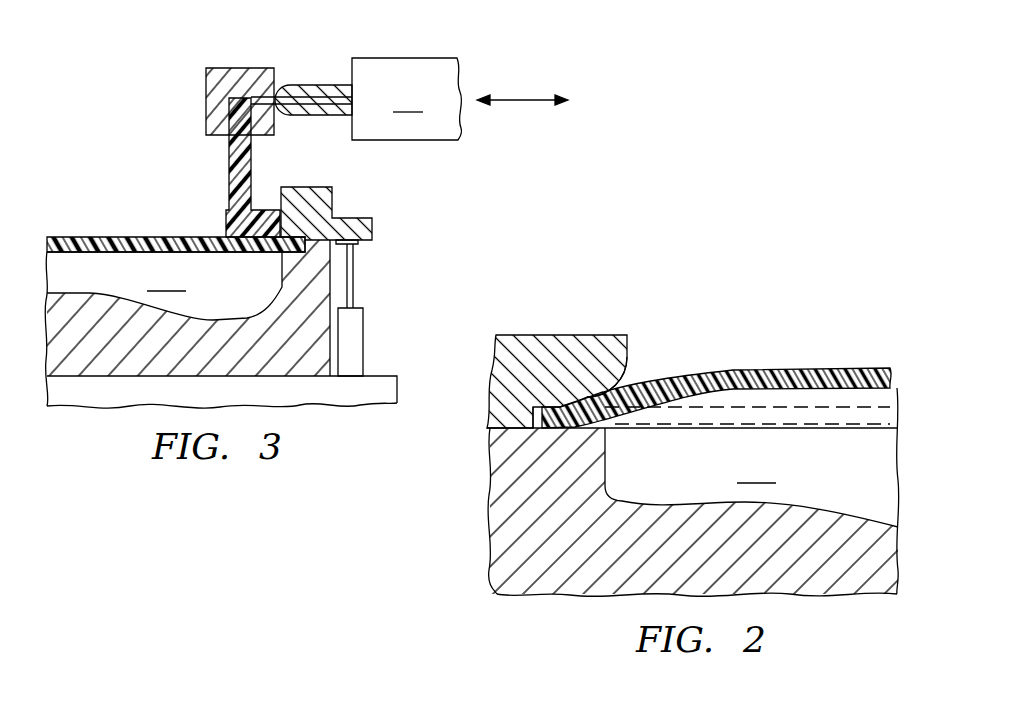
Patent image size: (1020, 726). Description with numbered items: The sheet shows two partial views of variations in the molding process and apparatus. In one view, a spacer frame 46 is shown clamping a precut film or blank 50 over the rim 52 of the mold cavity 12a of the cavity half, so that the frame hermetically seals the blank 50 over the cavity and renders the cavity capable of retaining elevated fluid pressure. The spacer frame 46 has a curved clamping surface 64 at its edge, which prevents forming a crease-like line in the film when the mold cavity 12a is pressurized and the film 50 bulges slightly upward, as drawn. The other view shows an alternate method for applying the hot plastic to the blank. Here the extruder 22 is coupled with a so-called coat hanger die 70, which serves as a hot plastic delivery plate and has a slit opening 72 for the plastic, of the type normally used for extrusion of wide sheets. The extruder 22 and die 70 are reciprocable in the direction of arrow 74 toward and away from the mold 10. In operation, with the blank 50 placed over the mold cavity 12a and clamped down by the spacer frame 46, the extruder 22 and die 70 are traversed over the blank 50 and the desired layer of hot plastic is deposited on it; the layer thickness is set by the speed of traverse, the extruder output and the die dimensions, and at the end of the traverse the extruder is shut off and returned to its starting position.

In FIG. 3, the mold 10 is at (97, 201).
In FIG. 3, the mold cavity 12a is at (221, 324).
In FIG. 2, the mold cavity 12a is at (693, 492).
In FIG. 3, the extruder/injection unit 22 is at (407, 99).
In FIG. 3, the spacer frame 46 is at (370, 225).
In FIG. 2, the spacer frame 46 is at (512, 375).
In FIG. 3, the film or blank 50 is at (174, 237).
In FIG. 2, the film or blank 50 is at (745, 370).
In FIG. 2, the rim 52 is at (540, 428).
In FIG. 2, the curved clamping surface 64 is at (612, 372).
In FIG. 3, the coat hanger die 70 is at (245, 77).
In FIG. 3, the slit opening 72 is at (229, 140).
In FIG. 3, the arrow 74 is at (527, 98).